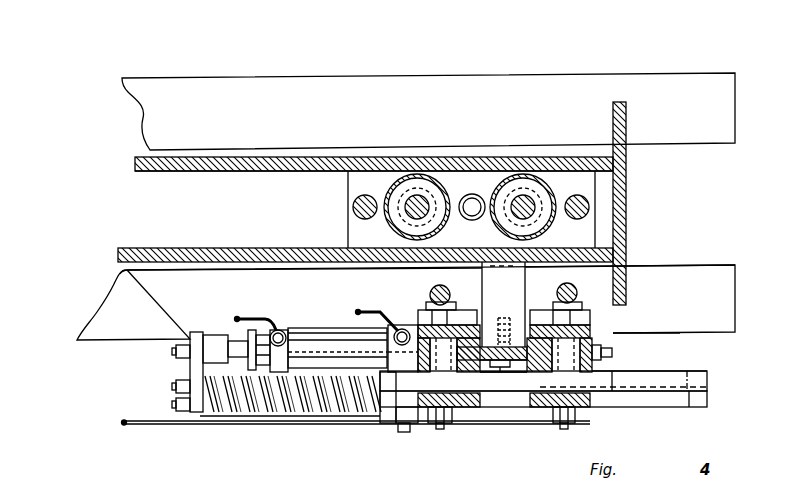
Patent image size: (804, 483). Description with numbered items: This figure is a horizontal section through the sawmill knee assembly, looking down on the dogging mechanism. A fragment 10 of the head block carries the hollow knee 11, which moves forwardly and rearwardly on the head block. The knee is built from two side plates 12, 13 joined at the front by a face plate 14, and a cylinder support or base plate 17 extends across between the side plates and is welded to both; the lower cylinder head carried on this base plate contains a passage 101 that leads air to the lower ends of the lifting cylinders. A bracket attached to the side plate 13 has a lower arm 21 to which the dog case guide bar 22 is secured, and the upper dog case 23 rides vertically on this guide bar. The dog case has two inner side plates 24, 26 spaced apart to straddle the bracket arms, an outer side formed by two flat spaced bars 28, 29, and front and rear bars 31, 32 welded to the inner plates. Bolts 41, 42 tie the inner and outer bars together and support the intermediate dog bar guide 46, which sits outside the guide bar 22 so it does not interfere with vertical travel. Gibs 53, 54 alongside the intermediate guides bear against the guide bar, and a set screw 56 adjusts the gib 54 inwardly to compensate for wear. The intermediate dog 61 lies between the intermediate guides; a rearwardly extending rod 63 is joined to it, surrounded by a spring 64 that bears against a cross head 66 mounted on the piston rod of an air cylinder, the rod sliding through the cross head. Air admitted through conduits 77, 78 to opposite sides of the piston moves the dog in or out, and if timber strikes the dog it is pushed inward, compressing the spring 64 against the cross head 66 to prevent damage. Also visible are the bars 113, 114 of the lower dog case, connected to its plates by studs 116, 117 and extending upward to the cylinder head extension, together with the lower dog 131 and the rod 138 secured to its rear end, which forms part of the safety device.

The fragment of head block 10 is at (545, 73).
The hollow knee 11 is at (472, 156).
The side plate 12 is at (205, 171).
The side plate 13 is at (200, 248).
The face plate 14 is at (626, 220).
The base plate 17 is at (348, 193).
The passage 101 is at (473, 221).
The lower arm 21 is at (526, 287).
The dog case guide bar 22 is at (549, 372).
The upper dog case 23 is at (598, 401).
The inner side plate 24 is at (418, 327).
The inner side plate 26 is at (586, 338).
The flat spaced bar 28 is at (472, 408).
The flat spaced bar 29 is at (546, 408).
The front bar 31 is at (595, 366).
The rear bar 32 is at (426, 364).
The bolt 41 is at (437, 424).
The bolt 42 is at (565, 425).
The intermediate dog bar guide 46 is at (505, 392).
The gib 53 is at (462, 345).
The gib 54 is at (553, 351).
The set screw 56 is at (612, 350).
The intermediate dog 61 is at (700, 371).
The rod 63 is at (178, 386).
The spring 64 is at (288, 414).
The cross head 66 is at (197, 333).
The conduit 77 is at (270, 318).
The conduit 78 is at (366, 311).
The bar 113 is at (443, 290).
The bar 114 is at (573, 289).
The stud 116 is at (553, 308).
The stud 117 is at (428, 300).
The lower dog 131 is at (686, 406).
The rod 138 is at (232, 425).